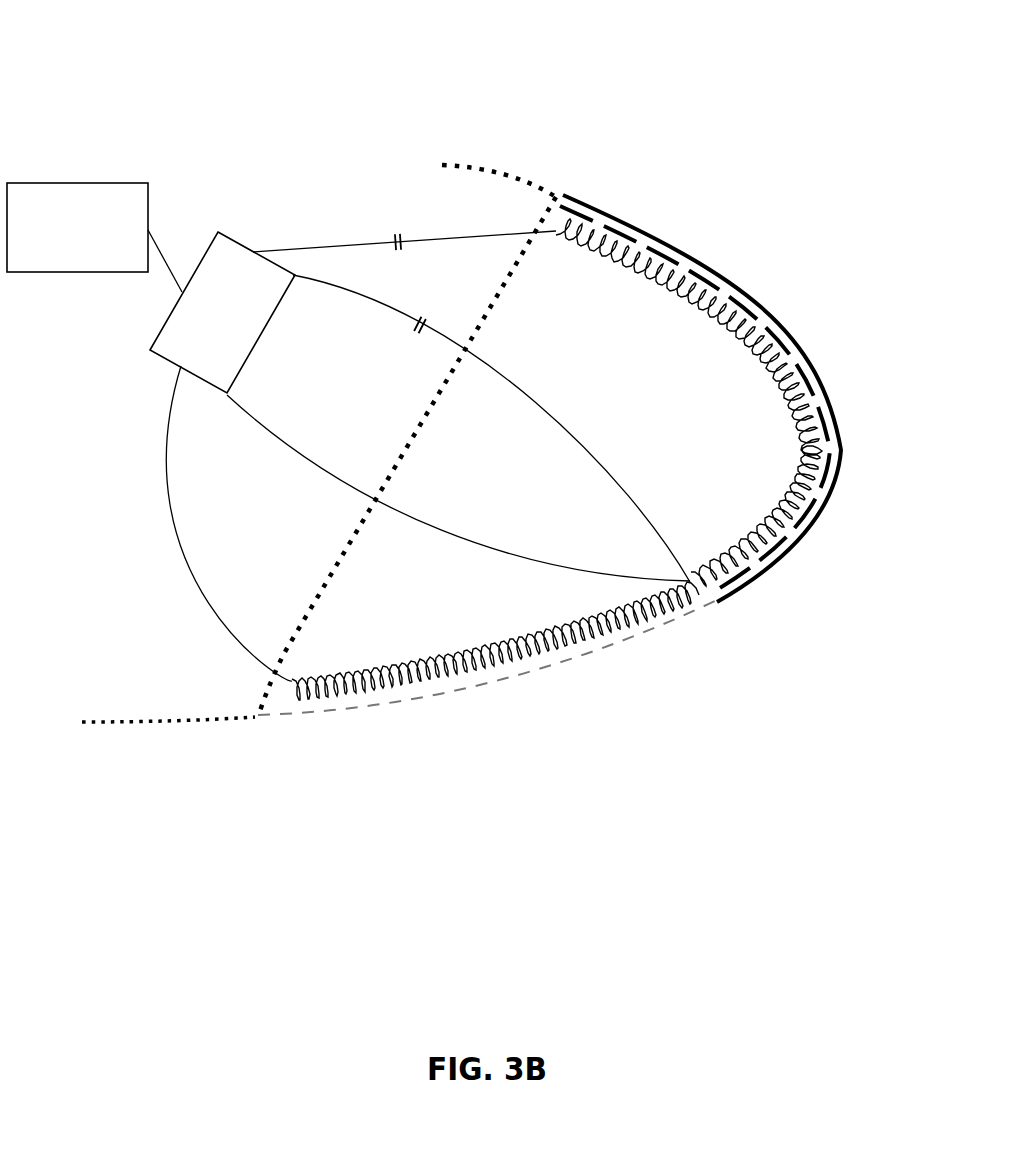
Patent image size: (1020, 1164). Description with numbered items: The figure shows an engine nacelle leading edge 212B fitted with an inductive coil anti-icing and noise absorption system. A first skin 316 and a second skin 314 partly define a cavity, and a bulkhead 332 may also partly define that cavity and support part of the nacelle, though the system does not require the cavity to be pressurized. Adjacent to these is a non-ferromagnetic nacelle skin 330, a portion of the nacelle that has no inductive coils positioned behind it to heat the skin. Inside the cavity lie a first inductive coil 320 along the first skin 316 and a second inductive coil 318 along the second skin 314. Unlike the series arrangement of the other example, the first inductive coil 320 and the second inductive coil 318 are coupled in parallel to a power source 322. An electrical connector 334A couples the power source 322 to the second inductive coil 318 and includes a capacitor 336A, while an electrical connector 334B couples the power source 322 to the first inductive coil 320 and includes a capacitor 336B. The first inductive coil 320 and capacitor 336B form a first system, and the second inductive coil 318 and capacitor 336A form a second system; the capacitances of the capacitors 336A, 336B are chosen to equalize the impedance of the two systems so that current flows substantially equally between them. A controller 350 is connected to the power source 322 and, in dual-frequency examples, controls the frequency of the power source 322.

The engine nacelle leading edge 212B is at (205, 40).
The second skin 314 is at (699, 255).
The first skin 316 is at (580, 668).
The second inductive coil 318 is at (674, 304).
The first inductive coil 320 is at (498, 648).
The power source 322 is at (222, 312).
The non-ferromagnetic nacelle skin 330 is at (491, 170).
The bulkhead 332 is at (351, 522).
The electrical connector 334A is at (338, 241).
The electrical connector 334B is at (541, 403).
The capacitor 336A is at (406, 228).
The capacitor 336B is at (410, 337).
The controller 350 is at (94, 237).